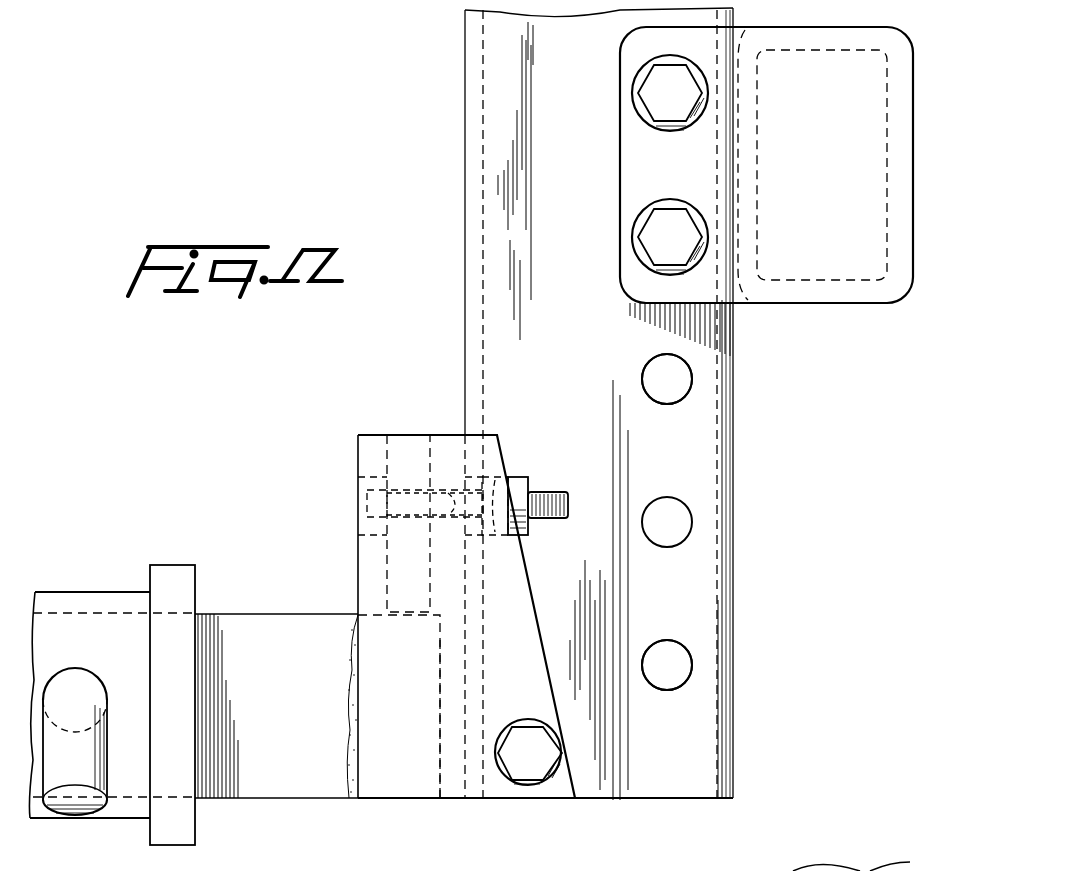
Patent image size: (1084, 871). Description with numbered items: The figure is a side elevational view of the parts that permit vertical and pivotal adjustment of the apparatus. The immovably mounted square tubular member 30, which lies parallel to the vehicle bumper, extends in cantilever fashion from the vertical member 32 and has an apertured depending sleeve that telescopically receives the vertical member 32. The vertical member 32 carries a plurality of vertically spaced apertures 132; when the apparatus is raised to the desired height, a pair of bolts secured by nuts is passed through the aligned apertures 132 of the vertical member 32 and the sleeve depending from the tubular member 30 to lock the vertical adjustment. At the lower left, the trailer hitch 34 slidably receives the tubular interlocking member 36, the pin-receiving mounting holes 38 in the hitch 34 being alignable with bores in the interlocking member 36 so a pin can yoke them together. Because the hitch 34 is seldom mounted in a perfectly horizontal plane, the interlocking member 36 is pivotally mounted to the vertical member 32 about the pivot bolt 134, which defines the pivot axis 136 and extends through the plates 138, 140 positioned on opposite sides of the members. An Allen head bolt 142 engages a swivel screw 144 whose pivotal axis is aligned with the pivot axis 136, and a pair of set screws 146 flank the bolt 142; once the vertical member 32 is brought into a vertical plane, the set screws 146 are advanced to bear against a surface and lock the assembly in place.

The square tubular member 30 is at (810, 292).
The vertical member 32 is at (467, 350).
The trailer hitch 34 is at (85, 595).
The tubular interlocking member 36 is at (288, 796).
The pin-receiving mounting holes 38 is at (87, 673).
The vertically spaced apertures 132 is at (688, 380).
The pivot bolt 134 is at (535, 765).
The pivot axis 136 is at (589, 834).
The plate 138 is at (390, 787).
The plate 140 is at (450, 787).
The Allen head bolt 142 is at (372, 538).
The swivel screw 144 is at (528, 477).
The set screws 146 is at (358, 480).